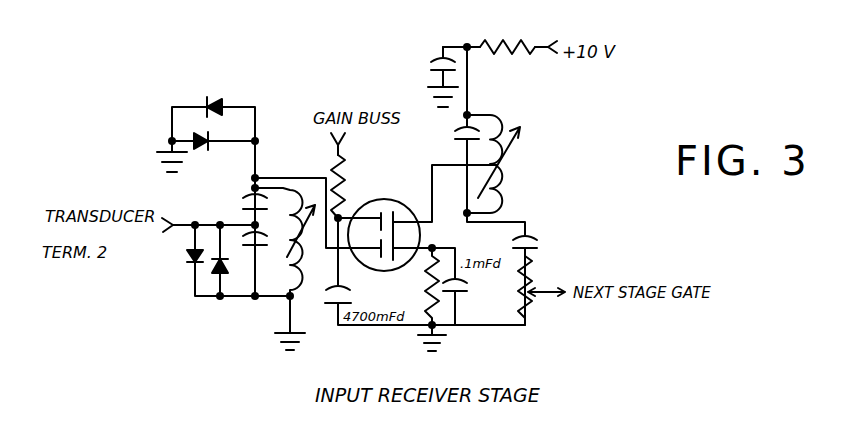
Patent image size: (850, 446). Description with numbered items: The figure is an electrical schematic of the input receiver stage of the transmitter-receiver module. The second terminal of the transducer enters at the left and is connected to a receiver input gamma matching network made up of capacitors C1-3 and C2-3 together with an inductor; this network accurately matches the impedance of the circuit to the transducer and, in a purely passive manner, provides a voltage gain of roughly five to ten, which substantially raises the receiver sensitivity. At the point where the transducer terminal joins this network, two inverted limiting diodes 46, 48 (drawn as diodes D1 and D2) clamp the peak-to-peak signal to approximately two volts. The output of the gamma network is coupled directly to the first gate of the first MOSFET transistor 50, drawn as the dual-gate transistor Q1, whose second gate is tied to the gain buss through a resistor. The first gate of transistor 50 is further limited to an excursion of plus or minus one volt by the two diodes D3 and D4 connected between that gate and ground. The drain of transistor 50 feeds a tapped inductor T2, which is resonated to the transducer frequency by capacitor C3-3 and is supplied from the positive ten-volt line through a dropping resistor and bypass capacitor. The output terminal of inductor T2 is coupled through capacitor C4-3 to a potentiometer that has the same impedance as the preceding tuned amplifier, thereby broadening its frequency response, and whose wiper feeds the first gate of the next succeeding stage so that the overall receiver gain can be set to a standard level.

The inverted limiting diode 46 is at (190, 260).
The inverted limiting diode 48 is at (213, 274).
The first MOSFET transistor 50 is at (399, 200).
The clamp diode D1 is at (178, 267).
The clamp diode D2 is at (228, 256).
The diode D3 is at (212, 153).
The diode D4 is at (226, 98).
The dual-gate FET input transistor Q1 is at (384, 226).
The tapped inductor T2 is at (493, 154).
The capacitor C1-3 is at (279, 242).
The capacitor C2-3 is at (230, 206).
The capacitor C3-3 is at (449, 138).
The capacitor C4-3 is at (547, 244).